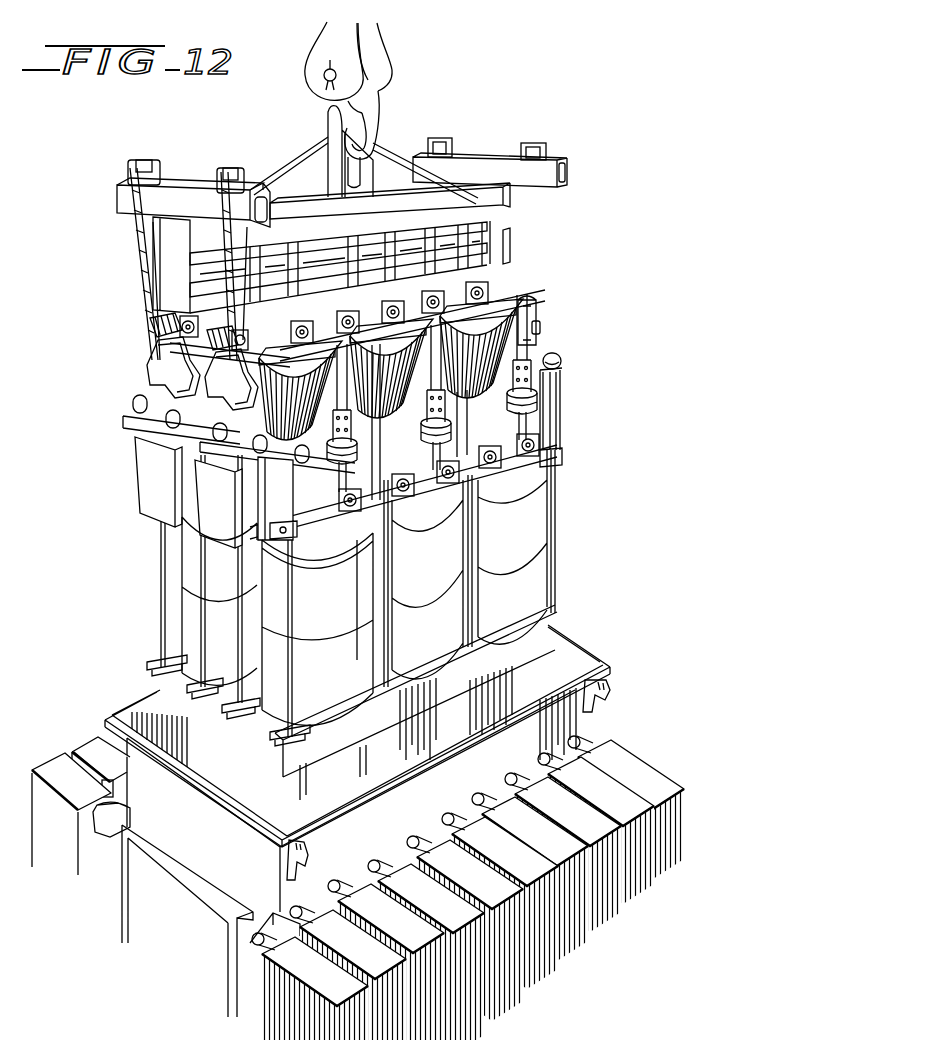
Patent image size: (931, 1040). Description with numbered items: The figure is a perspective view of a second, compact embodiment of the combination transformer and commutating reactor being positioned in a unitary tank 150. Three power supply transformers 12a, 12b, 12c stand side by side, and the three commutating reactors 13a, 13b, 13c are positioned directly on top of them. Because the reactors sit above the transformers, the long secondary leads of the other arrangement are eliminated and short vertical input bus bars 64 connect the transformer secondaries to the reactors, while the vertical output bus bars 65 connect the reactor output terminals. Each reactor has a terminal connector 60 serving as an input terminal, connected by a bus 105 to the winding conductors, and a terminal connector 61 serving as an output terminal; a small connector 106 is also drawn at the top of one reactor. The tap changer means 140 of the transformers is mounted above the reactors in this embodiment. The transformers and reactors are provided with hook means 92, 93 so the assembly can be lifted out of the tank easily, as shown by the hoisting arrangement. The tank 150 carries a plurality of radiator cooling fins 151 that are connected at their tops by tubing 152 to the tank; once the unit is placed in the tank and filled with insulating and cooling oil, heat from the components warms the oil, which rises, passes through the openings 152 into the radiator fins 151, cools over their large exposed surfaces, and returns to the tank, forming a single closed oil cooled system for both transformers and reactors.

The tap changer means 140 is at (335, 236).
The commutating reactor 13a is at (270, 360).
The commutating reactor 13b is at (363, 352).
The commutating reactor 13c is at (470, 333).
The vertical output bus bar 65 is at (309, 351).
The terminal connector 61 is at (528, 320).
The connector 106 is at (537, 328).
The terminal connector 60 is at (350, 420).
The hook means 93 is at (558, 362).
The hook means 92 is at (275, 440).
The bus 105 is at (316, 428).
The vertical input bus bar 64 is at (339, 478).
The power supply transformer 12a is at (240, 634).
The power supply transformer 12b is at (438, 634).
The power supply transformer 12c is at (524, 604).
The tank 150 is at (580, 660).
The radiator cooling fin 151 is at (45, 757).
The tubing 152 is at (592, 745).